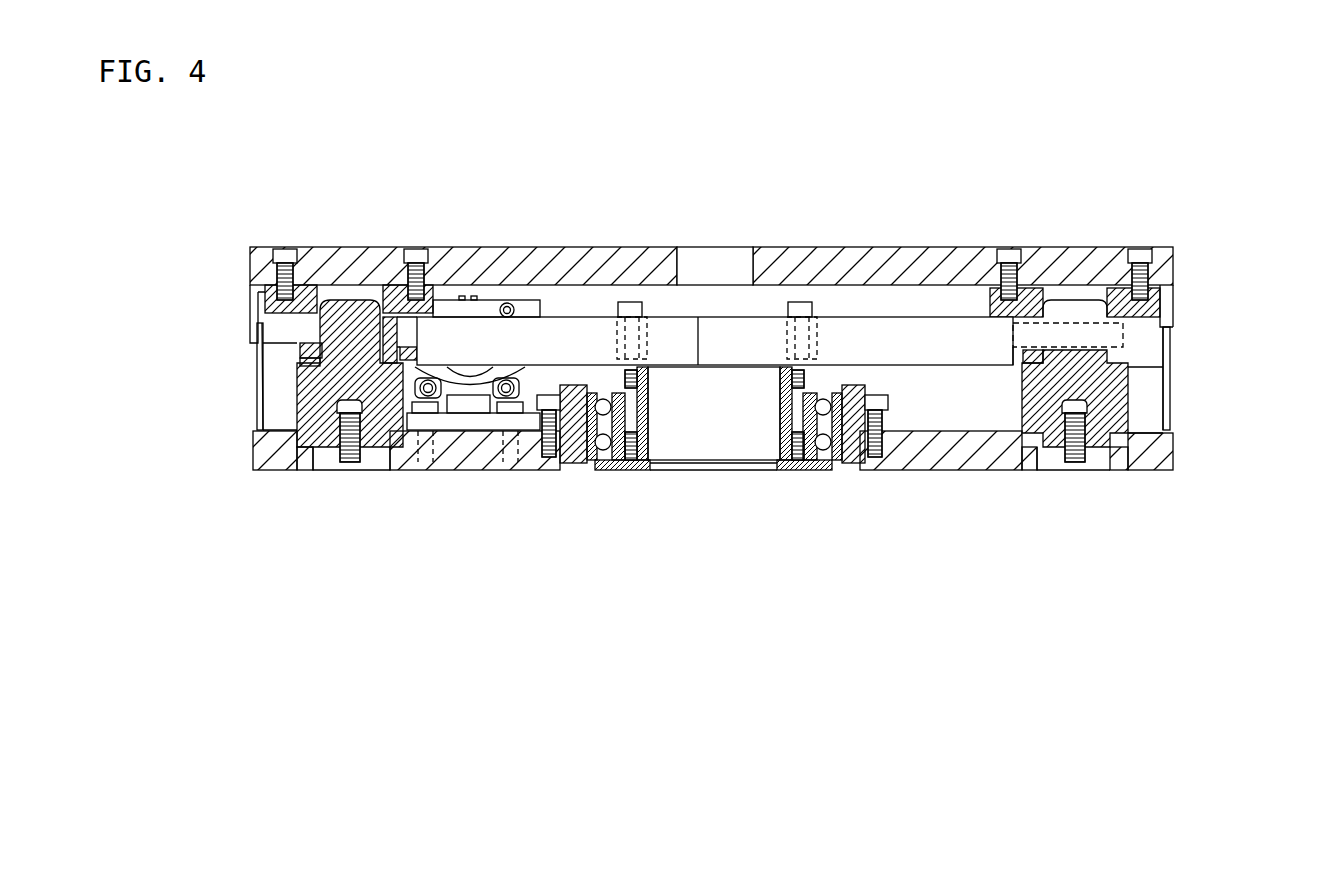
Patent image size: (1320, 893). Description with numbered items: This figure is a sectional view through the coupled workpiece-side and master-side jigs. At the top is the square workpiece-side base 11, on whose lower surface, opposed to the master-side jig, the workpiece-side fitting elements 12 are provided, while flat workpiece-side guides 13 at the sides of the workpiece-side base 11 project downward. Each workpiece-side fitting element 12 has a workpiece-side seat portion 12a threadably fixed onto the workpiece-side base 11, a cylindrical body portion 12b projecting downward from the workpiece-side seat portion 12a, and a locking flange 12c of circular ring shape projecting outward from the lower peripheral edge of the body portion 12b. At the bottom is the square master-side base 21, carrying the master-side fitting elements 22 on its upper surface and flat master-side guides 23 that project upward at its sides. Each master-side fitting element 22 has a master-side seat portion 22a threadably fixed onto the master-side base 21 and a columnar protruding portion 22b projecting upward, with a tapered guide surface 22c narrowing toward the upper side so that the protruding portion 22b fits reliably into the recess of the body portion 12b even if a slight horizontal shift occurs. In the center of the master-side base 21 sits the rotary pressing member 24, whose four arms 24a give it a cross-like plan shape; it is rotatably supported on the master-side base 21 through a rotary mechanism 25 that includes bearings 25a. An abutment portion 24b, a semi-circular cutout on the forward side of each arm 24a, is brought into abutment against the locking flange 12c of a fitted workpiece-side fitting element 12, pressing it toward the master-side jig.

The workpiece-side base 11 is at (250, 258).
The workpiece-side fitting element 12 is at (152, 343).
The workpiece-side seat portion 12a is at (303, 343).
The body portion 12b is at (301, 360).
The locking flange 12c is at (292, 412).
The workpiece-side guide 13 is at (250, 316).
The master-side base 21 is at (290, 472).
The master-side fitting element 22 is at (300, 418).
The master-side seat portion 22a is at (1130, 403).
The protruding portion 22b is at (1125, 358).
The tapered guide surface 22c is at (1150, 313).
The master-side guide 23 is at (257, 413).
The rotary pressing member 24 is at (698, 346).
The arm 24a is at (528, 327).
The abutment portion 24b is at (385, 297).
The rotary mechanism 25 is at (783, 470).
The bearing 25a is at (598, 470).